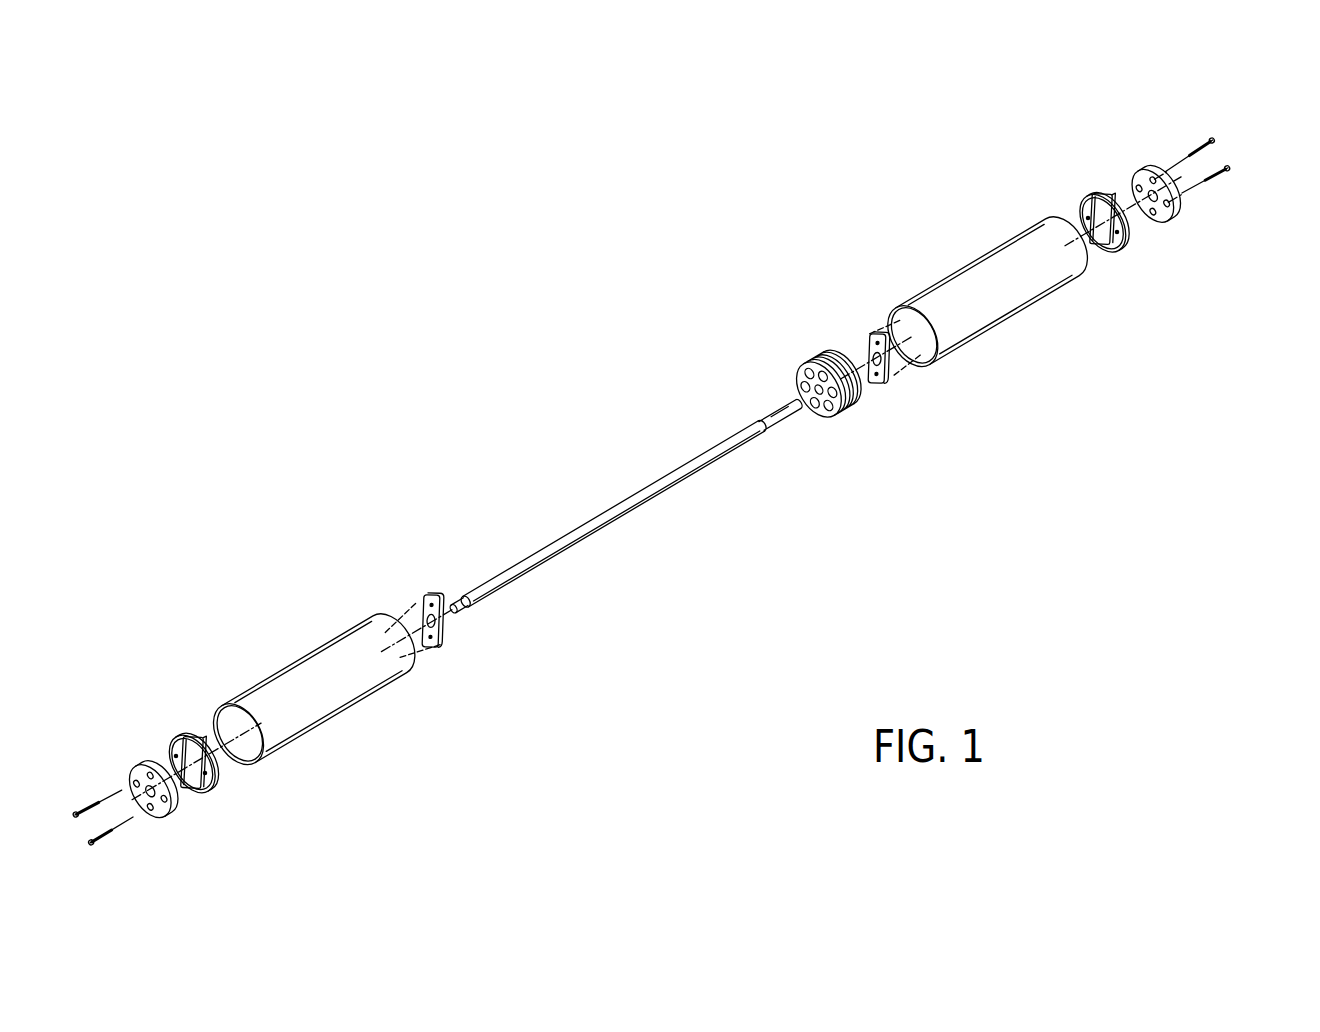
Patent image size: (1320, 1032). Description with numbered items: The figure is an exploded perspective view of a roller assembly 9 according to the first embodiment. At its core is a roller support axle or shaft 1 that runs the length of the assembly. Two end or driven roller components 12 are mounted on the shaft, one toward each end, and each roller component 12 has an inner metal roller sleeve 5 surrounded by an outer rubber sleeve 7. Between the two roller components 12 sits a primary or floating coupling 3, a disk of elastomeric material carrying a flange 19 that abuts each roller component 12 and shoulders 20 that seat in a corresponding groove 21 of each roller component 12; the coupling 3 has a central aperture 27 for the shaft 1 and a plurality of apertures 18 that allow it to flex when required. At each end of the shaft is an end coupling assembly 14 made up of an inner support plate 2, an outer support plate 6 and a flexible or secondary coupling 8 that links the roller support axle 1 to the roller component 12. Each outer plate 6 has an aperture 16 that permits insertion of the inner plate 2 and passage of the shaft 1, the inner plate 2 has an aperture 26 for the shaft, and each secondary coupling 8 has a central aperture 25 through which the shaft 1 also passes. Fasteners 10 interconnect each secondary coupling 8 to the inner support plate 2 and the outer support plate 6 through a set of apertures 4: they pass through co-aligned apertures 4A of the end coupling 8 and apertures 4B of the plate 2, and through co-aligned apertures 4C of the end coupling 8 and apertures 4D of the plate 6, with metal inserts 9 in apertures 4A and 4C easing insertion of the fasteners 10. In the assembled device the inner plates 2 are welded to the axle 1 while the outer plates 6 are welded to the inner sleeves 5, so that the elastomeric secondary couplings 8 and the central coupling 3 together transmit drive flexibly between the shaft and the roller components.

The roller support axle 1 is at (627, 498).
The inner support plate 2 is at (437, 595).
The primary or floating coupling 3 is at (797, 368).
The disk rear face 4 is at (853, 417).
The aperture 4A is at (1145, 178).
The aperture 4B is at (866, 342).
The aperture 4C is at (1158, 208).
The aperture 4D is at (1113, 233).
The inner metal roller sleeve 5 is at (895, 312).
The outer support plate 6 is at (217, 778).
The outer rubber sleeve 7 is at (355, 687).
The flexible or secondary coupling 8 is at (145, 757).
The roller assembly 9 is at (523, 355).
The fasteners 10 is at (124, 826).
The roller component 12 is at (358, 645).
The end coupling assembly 14 is at (180, 827).
The aperture 16 is at (188, 737).
The apertures 18 is at (832, 417).
The flange 19 is at (818, 353).
The shoulders 20 is at (825, 400).
The groove 21 is at (905, 362).
The central aperture 25 is at (178, 793).
The aperture 26 is at (445, 635).
The central aperture 27 is at (817, 393).